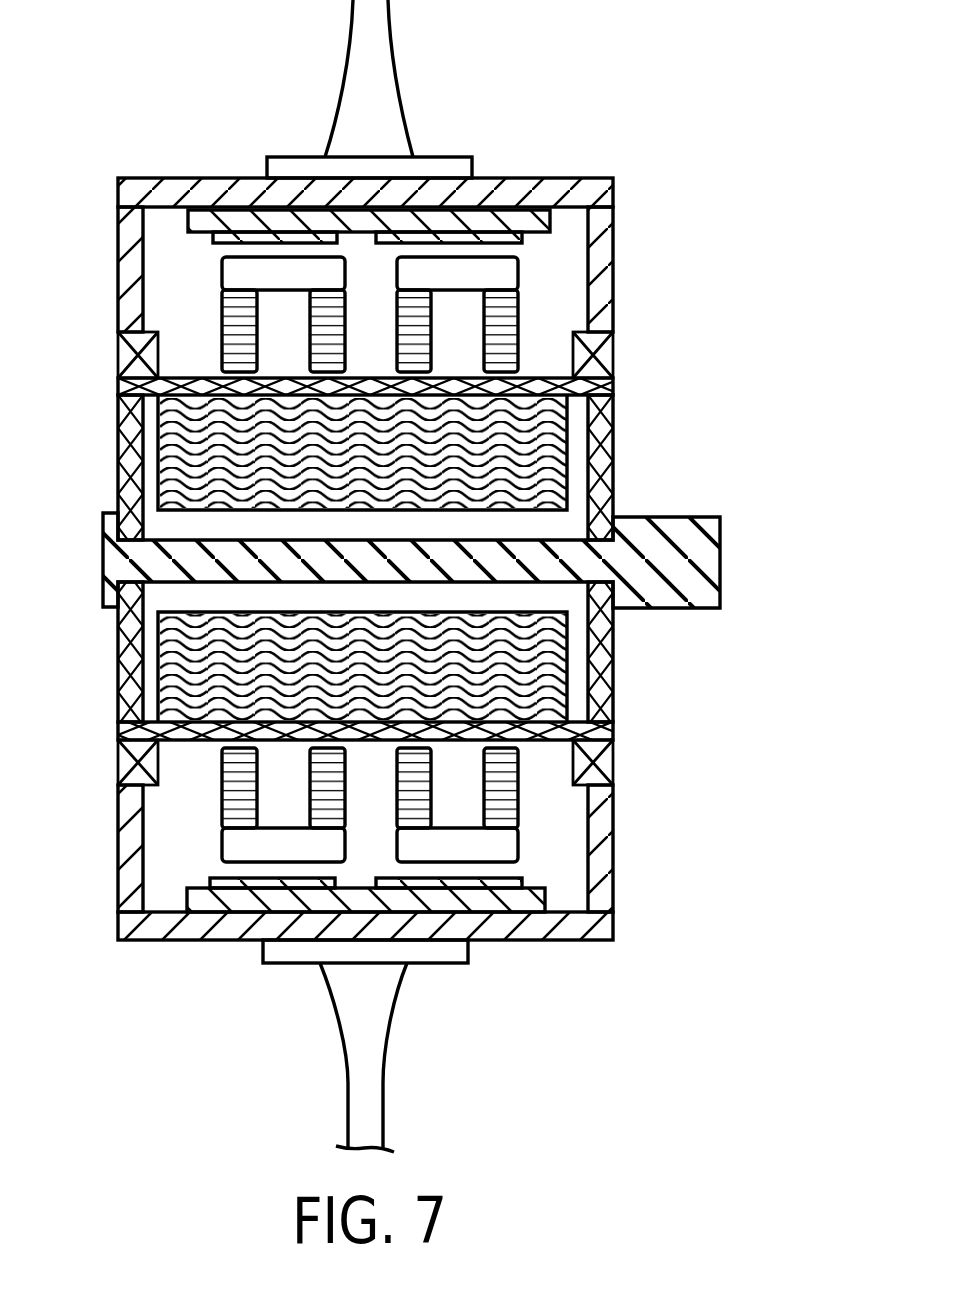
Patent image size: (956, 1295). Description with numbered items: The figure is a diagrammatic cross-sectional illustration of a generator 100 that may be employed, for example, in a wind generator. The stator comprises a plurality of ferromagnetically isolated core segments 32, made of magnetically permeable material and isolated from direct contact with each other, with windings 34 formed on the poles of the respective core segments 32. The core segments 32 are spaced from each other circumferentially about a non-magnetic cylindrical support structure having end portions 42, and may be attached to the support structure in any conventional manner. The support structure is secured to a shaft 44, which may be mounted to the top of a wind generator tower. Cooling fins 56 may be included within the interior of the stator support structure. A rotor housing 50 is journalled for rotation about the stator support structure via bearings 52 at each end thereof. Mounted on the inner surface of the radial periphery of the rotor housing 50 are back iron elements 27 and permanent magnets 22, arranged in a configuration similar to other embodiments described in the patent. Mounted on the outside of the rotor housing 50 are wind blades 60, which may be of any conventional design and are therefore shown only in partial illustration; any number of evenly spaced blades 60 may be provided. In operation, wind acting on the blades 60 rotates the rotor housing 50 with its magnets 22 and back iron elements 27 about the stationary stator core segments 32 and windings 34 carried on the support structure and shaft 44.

The generator 100 is at (740, 130).
The rotor housing 50 is at (586, 180).
The wind blades 60 is at (390, 45).
The back iron elements 27 is at (552, 219).
The permanent magnets 22 is at (520, 246).
The core segments 32 is at (222, 282).
The windings 34 is at (222, 335).
The bearings 52 is at (118, 355).
The end portions 42 is at (613, 425).
The cooling fins 56 is at (160, 440).
The shaft 44 is at (720, 550).